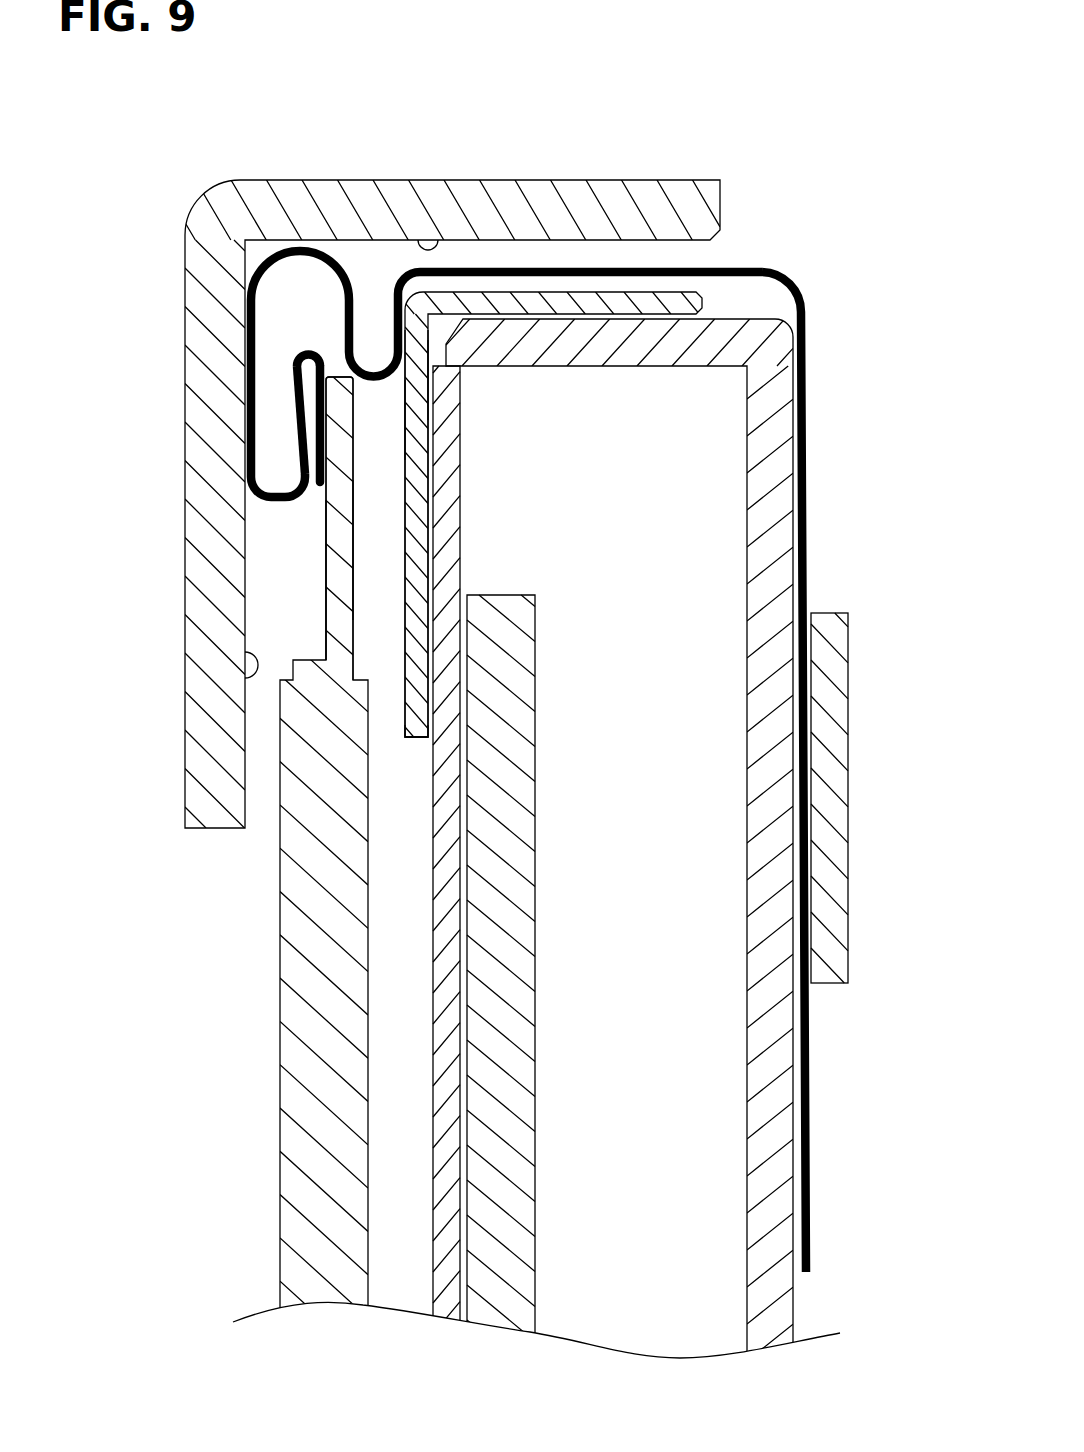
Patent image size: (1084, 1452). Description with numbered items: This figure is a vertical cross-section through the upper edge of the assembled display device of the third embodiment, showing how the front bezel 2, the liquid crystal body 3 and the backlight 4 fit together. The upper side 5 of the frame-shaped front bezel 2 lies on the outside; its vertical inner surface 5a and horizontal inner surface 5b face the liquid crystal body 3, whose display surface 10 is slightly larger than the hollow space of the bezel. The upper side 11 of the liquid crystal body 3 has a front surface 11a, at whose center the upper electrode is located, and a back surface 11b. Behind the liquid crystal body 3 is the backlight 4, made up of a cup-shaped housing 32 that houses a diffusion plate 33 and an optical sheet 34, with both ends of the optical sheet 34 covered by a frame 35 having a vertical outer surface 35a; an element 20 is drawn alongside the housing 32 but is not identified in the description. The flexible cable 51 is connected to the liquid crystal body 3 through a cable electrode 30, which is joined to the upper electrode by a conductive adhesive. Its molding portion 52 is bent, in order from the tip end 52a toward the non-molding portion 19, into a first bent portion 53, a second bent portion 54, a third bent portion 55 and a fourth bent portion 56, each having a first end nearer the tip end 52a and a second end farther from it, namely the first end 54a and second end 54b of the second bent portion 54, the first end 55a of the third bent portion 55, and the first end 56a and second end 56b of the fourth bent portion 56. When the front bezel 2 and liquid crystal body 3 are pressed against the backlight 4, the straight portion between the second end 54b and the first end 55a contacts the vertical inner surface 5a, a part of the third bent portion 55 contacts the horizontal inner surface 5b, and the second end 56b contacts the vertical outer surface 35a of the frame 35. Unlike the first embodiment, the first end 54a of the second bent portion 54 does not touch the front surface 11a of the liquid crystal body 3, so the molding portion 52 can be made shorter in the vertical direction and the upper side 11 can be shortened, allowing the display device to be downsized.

The front bezel 2 is at (190, 188).
The liquid crystal body 3 is at (258, 998).
The backlight 4 is at (750, 283).
The upper side 5 is at (215, 245).
The vertical inner surface 5a is at (247, 680).
The horizontal inner surface 5b is at (432, 245).
The display surface 10 is at (278, 1090).
The upper side 11 is at (335, 397).
The front surface 11a is at (326, 575).
The back surface 11b is at (356, 545).
The non-molding portion 19 is at (580, 267).
The circuit board 20 is at (850, 735).
The cable electrode 30 is at (365, 452).
The housing 32 is at (745, 555).
The diffusion plate 33 is at (512, 595).
The optical sheet 34 is at (460, 568).
The frame 35 is at (703, 302).
The vertical outer surface 35a is at (405, 620).
The flexible cable 51 is at (825, 378).
The molding portion 52 is at (375, 262).
The tip end 52a is at (322, 492).
The first bent portion 53 is at (300, 346).
The second bent portion 54 is at (277, 506).
The first end 54a is at (318, 490).
The second end 54b is at (247, 472).
The third bent portion 55 is at (300, 244).
The first end 55a is at (247, 295).
The fourth bent portion 56 is at (430, 410).
The bent leg inner surface 56a is at (408, 425).
The second end 56b is at (430, 385).